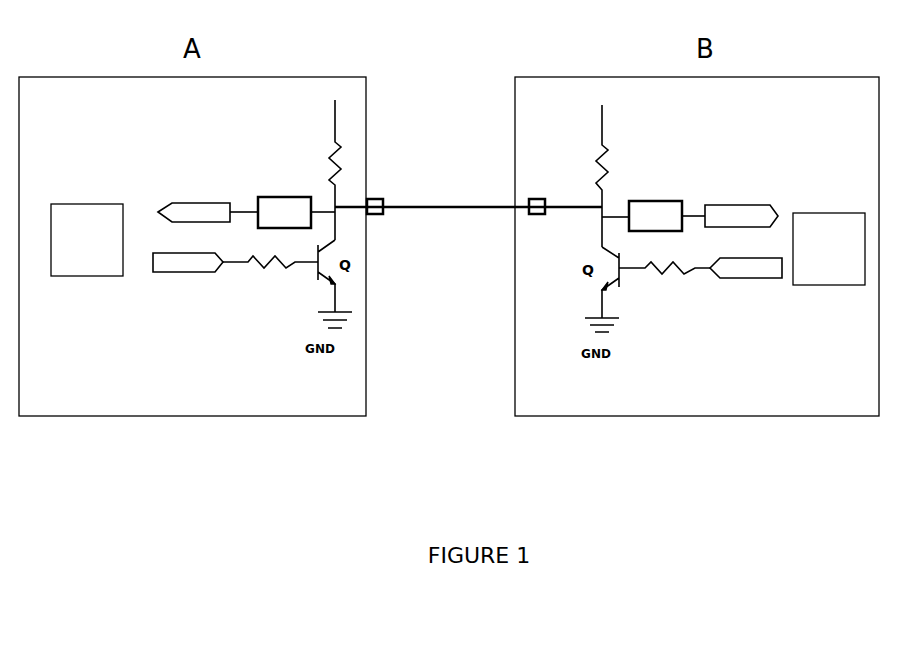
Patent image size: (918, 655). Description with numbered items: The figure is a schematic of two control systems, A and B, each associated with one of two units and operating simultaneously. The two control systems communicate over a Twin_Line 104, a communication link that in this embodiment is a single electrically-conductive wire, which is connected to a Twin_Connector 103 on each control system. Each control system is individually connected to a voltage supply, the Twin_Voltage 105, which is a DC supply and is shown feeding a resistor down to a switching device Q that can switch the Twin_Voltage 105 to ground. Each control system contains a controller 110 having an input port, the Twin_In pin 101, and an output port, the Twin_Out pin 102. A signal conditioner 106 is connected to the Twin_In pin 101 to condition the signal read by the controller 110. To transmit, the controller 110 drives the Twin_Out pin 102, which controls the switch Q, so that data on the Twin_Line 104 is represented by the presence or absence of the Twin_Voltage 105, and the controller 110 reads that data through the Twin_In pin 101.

The Twin_In pin 101 is at (469, 204).
The Twin_Out pin 102 is at (457, 272).
The Twin_Connector 103 is at (529, 197).
The Twin_Line 104 is at (466, 211).
The Twin_Voltage 105 is at (454, 170).
The signal conditioner 106 is at (470, 214).
The controller 110 is at (458, 244).